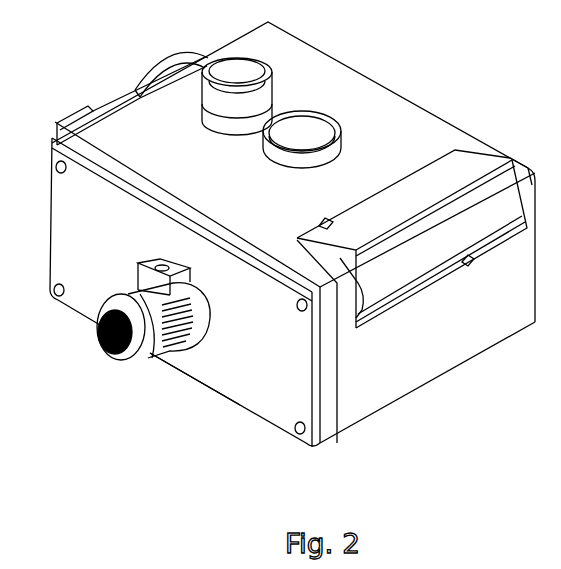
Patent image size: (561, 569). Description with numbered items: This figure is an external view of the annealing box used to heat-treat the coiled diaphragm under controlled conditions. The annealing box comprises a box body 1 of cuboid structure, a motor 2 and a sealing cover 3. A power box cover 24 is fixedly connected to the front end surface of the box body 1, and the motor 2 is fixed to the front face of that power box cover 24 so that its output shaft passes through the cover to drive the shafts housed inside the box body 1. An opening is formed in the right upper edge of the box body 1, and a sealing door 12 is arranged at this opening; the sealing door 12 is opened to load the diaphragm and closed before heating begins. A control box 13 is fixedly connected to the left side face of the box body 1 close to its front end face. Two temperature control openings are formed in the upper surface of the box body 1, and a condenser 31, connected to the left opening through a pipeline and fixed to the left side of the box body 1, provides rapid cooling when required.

The box body 1 is at (385, 86).
The motor 2 is at (115, 355).
The sealing cover 3 is at (268, 160).
The sealing door 12 is at (466, 257).
The control box 13 is at (62, 121).
The power box cover 24 is at (212, 390).
The condenser 31 is at (125, 97).